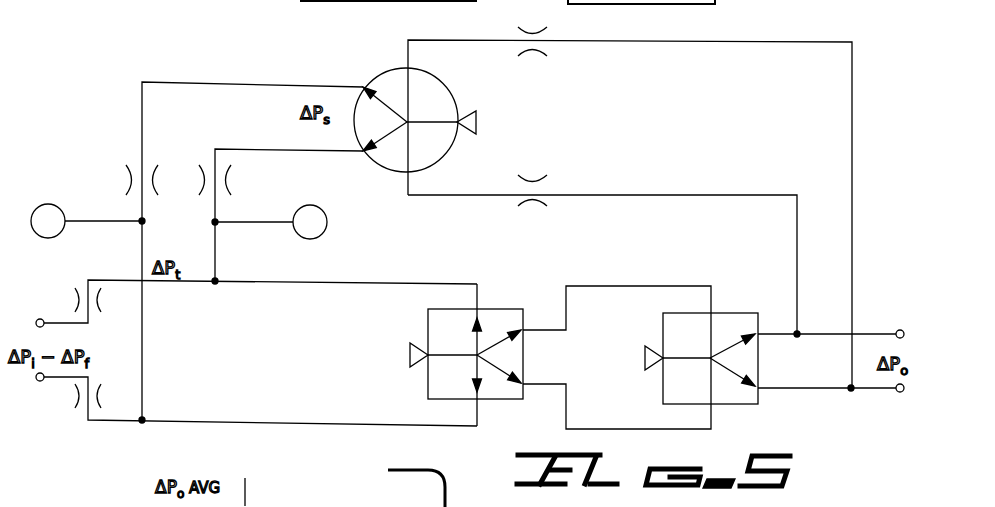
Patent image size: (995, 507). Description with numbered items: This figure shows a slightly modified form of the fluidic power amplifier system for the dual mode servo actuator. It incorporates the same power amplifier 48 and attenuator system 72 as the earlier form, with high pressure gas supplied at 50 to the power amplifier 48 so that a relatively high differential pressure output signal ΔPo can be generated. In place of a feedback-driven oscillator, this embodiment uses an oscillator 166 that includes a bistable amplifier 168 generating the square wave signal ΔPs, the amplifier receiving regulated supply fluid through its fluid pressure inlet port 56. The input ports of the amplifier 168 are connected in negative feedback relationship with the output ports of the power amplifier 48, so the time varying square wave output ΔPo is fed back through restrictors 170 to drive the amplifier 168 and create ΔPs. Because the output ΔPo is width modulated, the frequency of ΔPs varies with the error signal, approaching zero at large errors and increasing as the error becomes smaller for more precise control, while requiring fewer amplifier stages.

The attenuator system 72 is at (104, 193).
The bistable amplifier 168 is at (389, 70).
The fluid pressure inlet port 56 is at (478, 122).
The oscillator 166 is at (411, 203).
The restrictors 170 is at (532, 50).
The power amplifier 48 is at (569, 269).
The high pressure gas supply point 50 is at (412, 352).